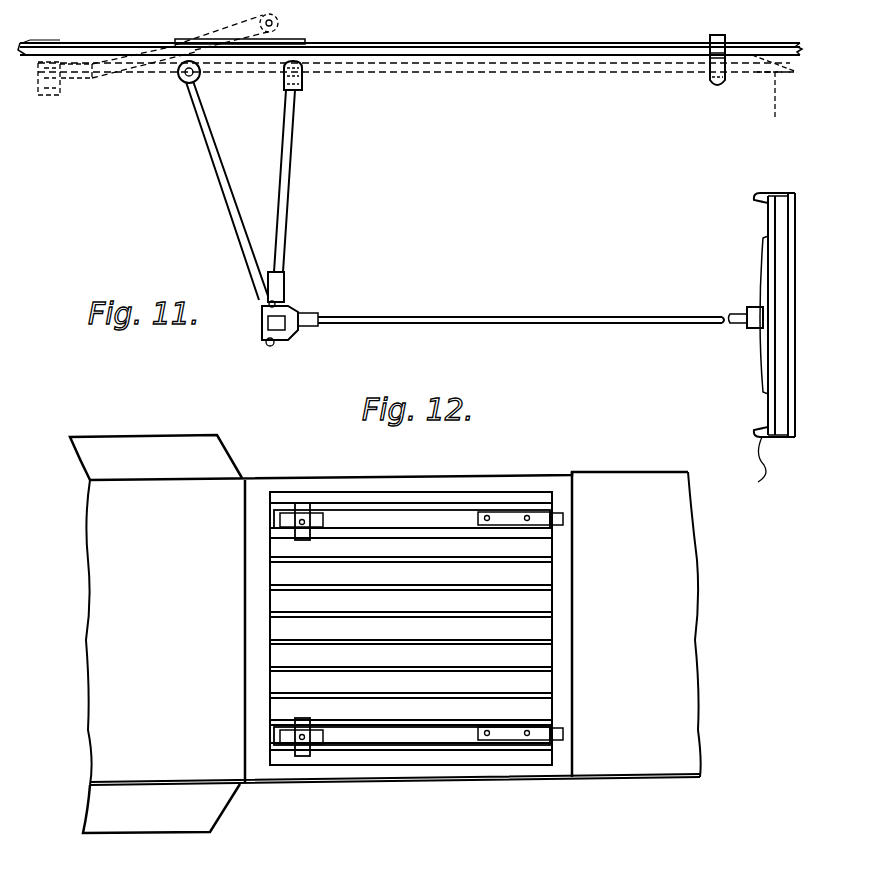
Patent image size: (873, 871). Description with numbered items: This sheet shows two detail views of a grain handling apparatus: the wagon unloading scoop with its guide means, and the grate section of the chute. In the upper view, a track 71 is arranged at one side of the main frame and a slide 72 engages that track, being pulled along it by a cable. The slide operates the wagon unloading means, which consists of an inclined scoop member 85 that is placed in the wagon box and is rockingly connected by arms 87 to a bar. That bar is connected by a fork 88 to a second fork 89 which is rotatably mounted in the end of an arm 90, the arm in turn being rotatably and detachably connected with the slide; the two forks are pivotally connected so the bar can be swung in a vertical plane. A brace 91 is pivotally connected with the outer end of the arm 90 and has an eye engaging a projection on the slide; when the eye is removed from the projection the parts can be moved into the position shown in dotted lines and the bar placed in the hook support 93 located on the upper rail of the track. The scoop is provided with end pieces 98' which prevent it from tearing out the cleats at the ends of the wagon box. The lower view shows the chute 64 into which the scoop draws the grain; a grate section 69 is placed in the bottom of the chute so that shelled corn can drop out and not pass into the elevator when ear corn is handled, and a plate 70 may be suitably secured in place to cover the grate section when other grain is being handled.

In FIG. 12, the chute 64 is at (683, 663).
In FIG. 12, the grate section 69 is at (425, 728).
In FIG. 12, the plate 70 is at (512, 604).
In FIG. 11, the track 71 is at (527, 48).
In FIG. 11, the slide 72 is at (303, 42).
In FIG. 11, the inclined scoop member 85 is at (765, 401).
In FIG. 11, the arms 87 is at (760, 265).
In FIG. 11, the fork 88 is at (296, 312).
In FIG. 11, the second fork 89 is at (266, 344).
In FIG. 11, the arm 90 is at (283, 197).
In FIG. 11, the brace 91 is at (215, 31).
In FIG. 11, the hook support 93 is at (717, 88).
In FIG. 11, the end pieces 98' is at (765, 468).